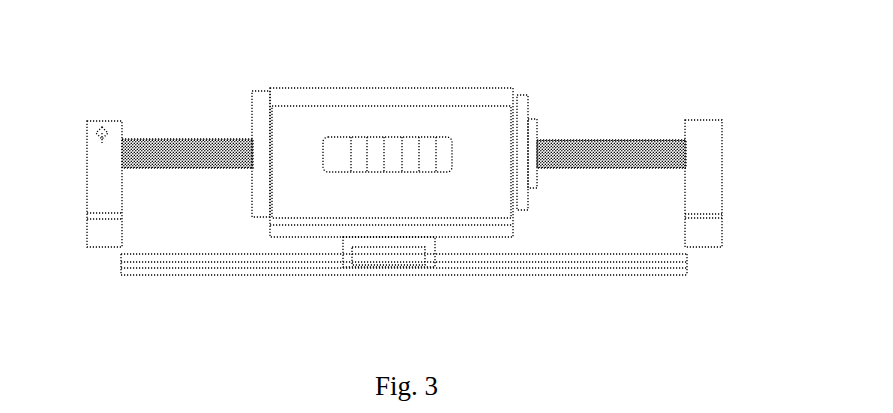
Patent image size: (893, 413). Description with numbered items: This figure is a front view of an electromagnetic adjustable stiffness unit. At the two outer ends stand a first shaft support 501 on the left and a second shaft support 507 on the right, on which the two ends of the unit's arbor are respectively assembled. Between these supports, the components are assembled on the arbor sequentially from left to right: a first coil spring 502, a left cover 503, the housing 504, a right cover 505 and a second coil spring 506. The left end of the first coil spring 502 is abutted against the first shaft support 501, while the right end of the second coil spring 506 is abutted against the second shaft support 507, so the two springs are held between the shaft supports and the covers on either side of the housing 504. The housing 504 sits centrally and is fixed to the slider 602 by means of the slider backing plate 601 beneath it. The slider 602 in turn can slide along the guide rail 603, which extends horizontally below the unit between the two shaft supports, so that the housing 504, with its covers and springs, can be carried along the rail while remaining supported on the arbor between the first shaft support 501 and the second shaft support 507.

The first shaft support 501 is at (102, 138).
The first coil spring 502 is at (192, 150).
The left cover 503 is at (263, 152).
The housing 504 is at (402, 108).
The right cover 505 is at (522, 123).
The second coil spring 506 is at (614, 150).
The second shaft support 507 is at (703, 142).
The slider backing plate 601 is at (347, 238).
The slider 602 is at (405, 256).
The guide rail 603 is at (513, 263).